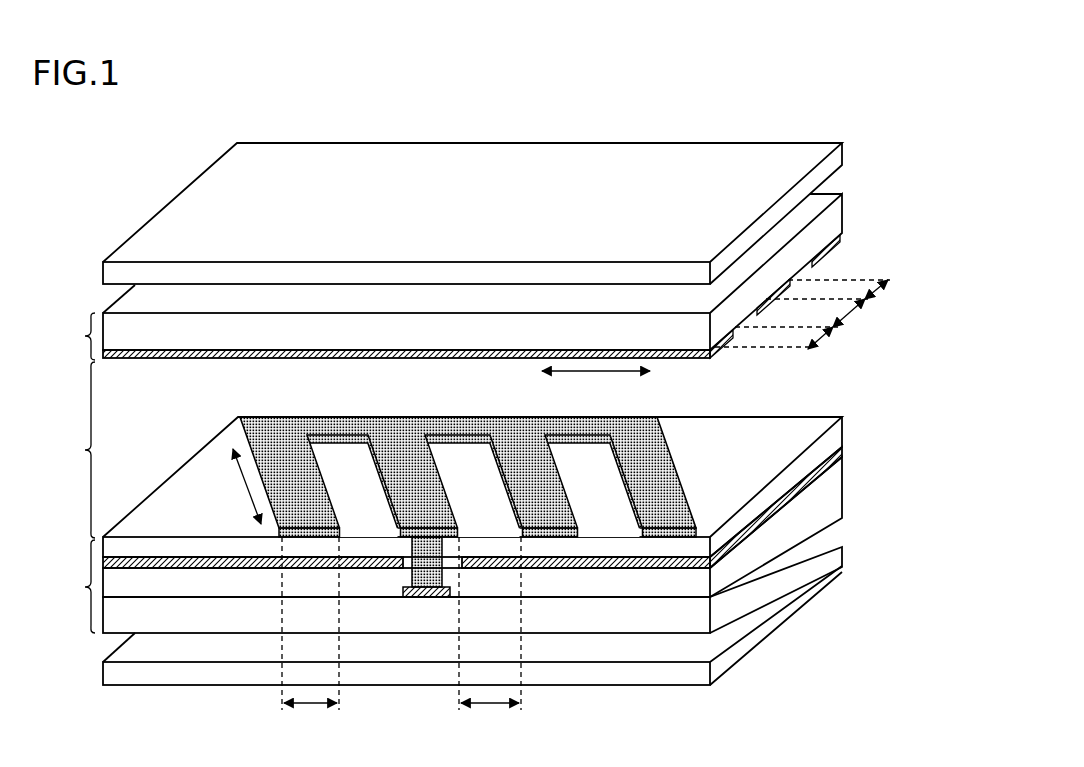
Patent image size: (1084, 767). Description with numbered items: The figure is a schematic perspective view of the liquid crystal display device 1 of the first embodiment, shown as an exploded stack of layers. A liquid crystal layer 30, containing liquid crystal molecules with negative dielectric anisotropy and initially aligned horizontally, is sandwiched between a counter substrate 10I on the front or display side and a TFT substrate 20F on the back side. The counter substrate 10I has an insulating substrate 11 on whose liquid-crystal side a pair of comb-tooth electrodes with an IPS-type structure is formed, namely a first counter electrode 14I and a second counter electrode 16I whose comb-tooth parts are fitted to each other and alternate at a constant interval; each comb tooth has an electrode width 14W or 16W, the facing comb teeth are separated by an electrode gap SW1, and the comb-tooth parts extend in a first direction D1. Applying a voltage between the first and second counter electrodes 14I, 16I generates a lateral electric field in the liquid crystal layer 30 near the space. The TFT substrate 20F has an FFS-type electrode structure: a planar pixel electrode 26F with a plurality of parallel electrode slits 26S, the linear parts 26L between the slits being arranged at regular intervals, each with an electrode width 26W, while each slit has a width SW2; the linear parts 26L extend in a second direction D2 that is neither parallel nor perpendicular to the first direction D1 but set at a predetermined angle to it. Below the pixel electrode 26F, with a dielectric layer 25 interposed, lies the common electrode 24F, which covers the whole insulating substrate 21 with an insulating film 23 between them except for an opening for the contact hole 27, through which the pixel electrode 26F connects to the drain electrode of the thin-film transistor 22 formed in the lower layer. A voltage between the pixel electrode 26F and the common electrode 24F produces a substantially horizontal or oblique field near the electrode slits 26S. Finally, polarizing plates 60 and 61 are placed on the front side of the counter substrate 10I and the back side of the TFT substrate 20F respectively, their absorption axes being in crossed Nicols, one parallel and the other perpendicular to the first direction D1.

The liquid crystal display device 1 is at (127, 210).
The polarizing plate 60 is at (838, 158).
The insulating substrate 11 is at (830, 219).
The counter substrate 10I is at (69, 336).
The first counter electrode 14I is at (692, 350).
The electrode width 14W is at (806, 345).
The second counter electrode 16I is at (778, 292).
The electrode width 16W is at (870, 293).
The electrode gap SW1 is at (844, 317).
The first direction D1 is at (596, 387).
The liquid crystal layer 30 is at (72, 450).
The dielectric layer 25 is at (815, 452).
The pixel electrode 26F is at (690, 450).
The second direction D2 is at (233, 486).
The common electrode 24F is at (800, 487).
The thin-film transistor 22 is at (413, 600).
The contact hole 27 is at (435, 600).
The insulating film 23 is at (790, 520).
The insulating substrate 21 is at (785, 552).
The TFT substrate 20F is at (63, 586).
The polarizing plate 61 is at (790, 607).
The electrode width 26W is at (312, 641).
The electrode gap SW2 is at (492, 641).
The electrode slit 26S is at (485, 517).
The linear part 26L is at (547, 522).